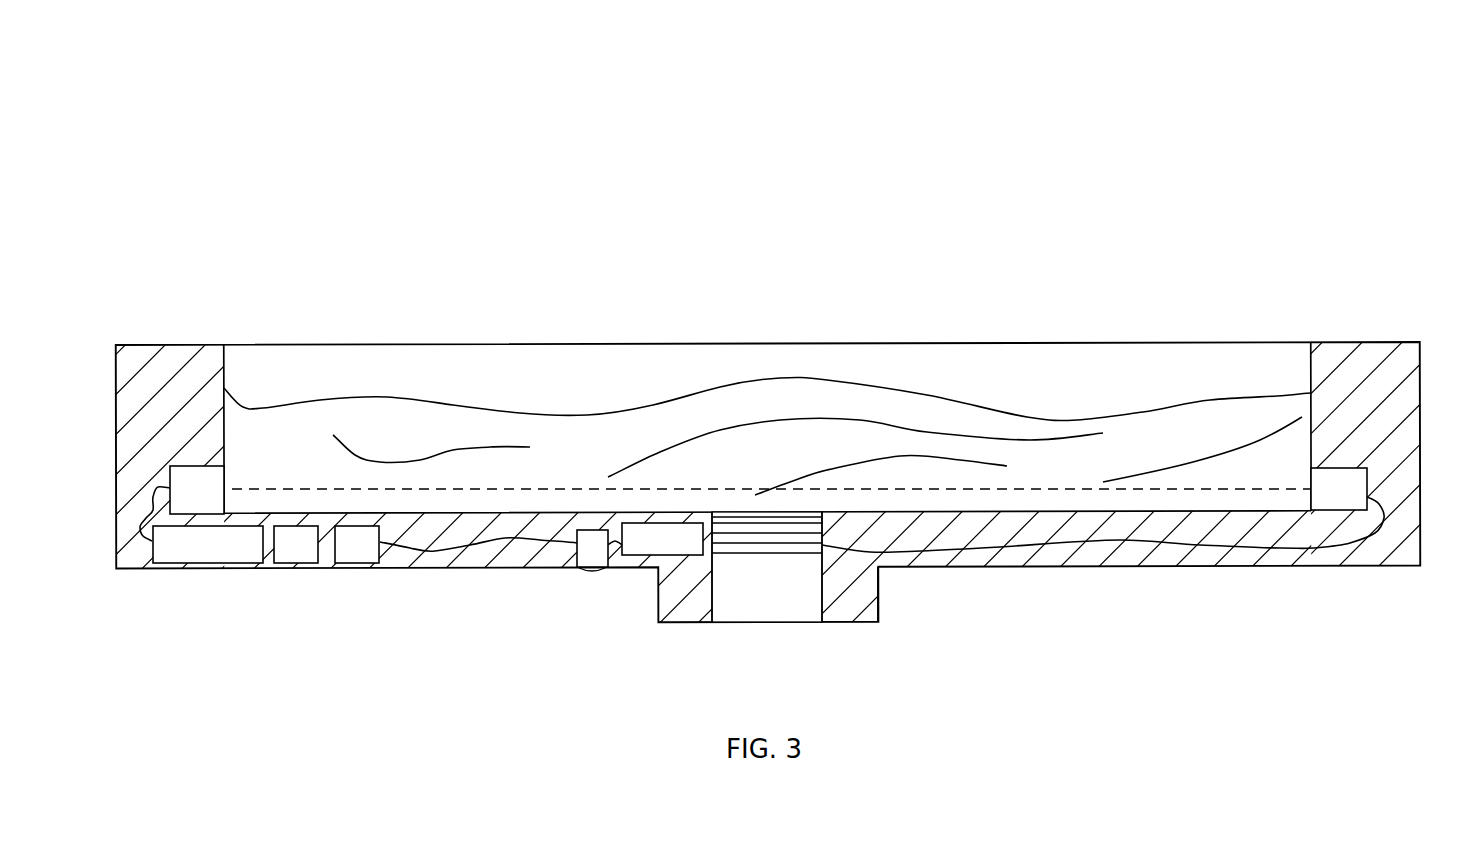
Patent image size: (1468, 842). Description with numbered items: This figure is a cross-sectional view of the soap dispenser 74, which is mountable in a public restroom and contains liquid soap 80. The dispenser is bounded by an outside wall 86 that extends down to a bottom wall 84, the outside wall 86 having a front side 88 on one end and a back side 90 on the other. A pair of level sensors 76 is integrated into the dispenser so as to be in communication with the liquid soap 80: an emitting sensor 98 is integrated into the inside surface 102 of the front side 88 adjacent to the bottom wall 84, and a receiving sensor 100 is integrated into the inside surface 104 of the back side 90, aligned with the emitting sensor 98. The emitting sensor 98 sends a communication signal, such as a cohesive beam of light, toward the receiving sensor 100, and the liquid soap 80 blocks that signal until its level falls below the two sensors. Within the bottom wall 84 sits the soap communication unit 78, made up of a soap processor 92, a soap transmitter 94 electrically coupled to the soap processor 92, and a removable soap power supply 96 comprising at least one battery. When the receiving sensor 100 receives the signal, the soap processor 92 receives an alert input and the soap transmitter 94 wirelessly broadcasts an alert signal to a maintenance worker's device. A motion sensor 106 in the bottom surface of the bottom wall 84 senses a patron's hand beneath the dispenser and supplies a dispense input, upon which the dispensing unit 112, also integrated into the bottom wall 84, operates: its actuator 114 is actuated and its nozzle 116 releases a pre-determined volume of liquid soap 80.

The soap dispenser 74 is at (1423, 600).
The level sensors 76 is at (188, 436).
The soap communication unit 78 is at (283, 605).
The liquid soap 80 is at (815, 373).
The bottom wall 84 is at (477, 568).
The outside wall 86 is at (116, 375).
The front side 88 is at (90, 520).
The back side 90 is at (1448, 372).
The soap processor 92 is at (370, 548).
The soap transmitter 94 is at (303, 548).
The soap power supply 96 is at (215, 555).
The emitting sensor 98 is at (203, 487).
The receiving sensor 100 is at (1348, 512).
The inside surface 102 is at (224, 369).
The inside surface 104 is at (1311, 406).
The motion sensor 106 is at (600, 568).
The dispensing unit 112 is at (722, 650).
The actuator 114 is at (672, 543).
The nozzle 116 is at (878, 590).